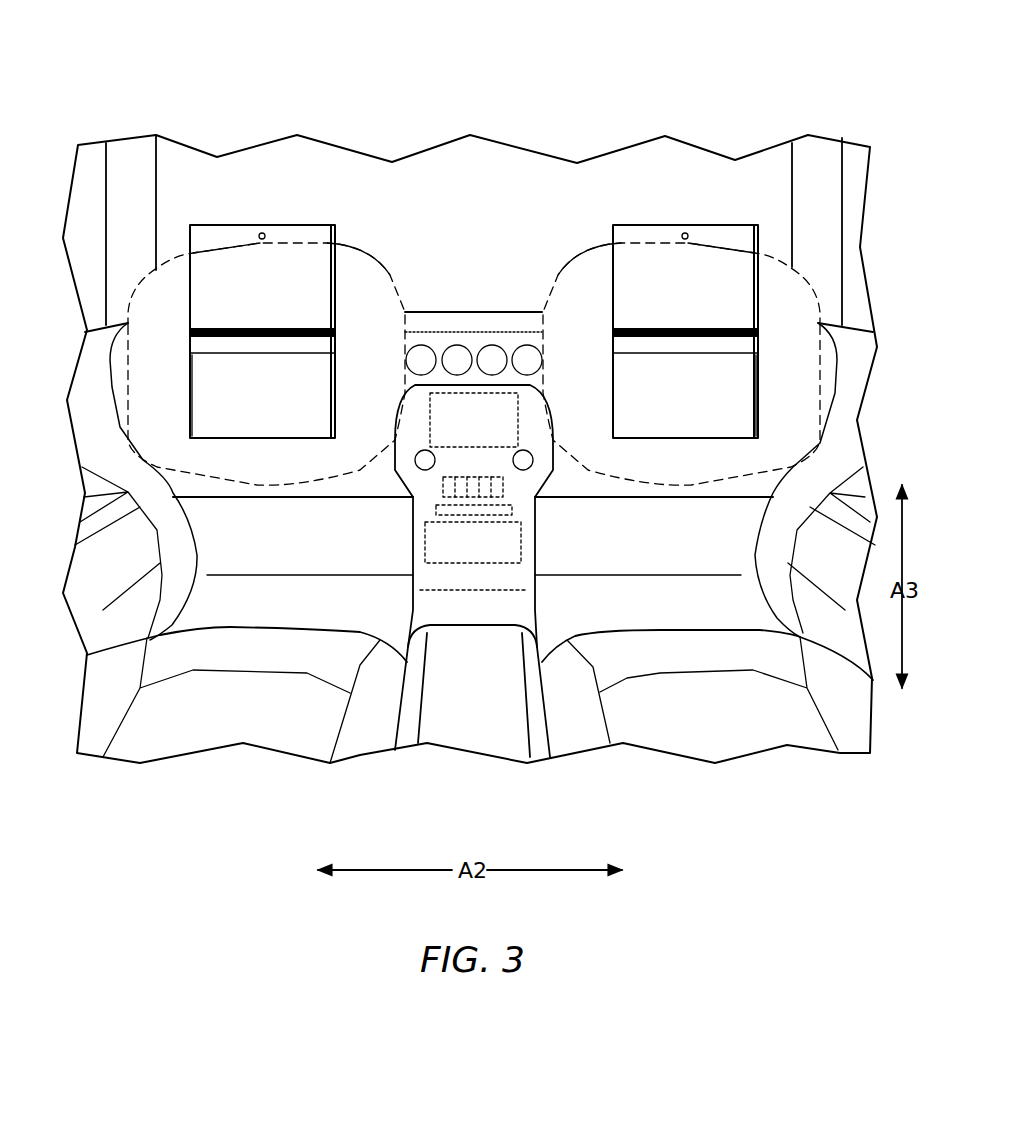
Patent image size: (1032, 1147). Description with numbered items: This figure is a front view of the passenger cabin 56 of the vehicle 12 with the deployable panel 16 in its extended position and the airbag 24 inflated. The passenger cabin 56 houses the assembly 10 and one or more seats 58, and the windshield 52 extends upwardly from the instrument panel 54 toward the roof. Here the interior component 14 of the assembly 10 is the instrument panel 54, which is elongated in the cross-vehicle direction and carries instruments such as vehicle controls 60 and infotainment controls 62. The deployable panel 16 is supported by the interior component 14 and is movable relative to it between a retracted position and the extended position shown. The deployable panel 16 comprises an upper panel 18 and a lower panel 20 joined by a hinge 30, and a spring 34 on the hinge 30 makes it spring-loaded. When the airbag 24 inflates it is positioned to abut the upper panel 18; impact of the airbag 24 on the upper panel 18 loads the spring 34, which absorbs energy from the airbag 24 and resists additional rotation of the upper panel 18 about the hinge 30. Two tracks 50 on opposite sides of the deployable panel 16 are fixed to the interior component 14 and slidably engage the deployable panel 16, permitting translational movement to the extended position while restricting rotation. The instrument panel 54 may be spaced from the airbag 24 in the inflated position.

The assembly 10 is at (520, 193).
The vehicle 12 is at (175, 78).
The interior component 14 is at (497, 310).
The deployable panel 16 is at (302, 218).
The upper panel 18 is at (308, 273).
The lower panel 20 is at (320, 348).
The airbag 24 is at (253, 487).
The hinge 30 is at (208, 340).
The spring 34 is at (252, 330).
The track 50 is at (217, 410).
The windshield 52 is at (632, 183).
The instrument panel 54 is at (474, 423).
The passenger cabin 56 is at (253, 185).
The seat 58 is at (187, 718).
The vehicle controls 60 is at (473, 342).
The infotainment controls 62 is at (497, 432).